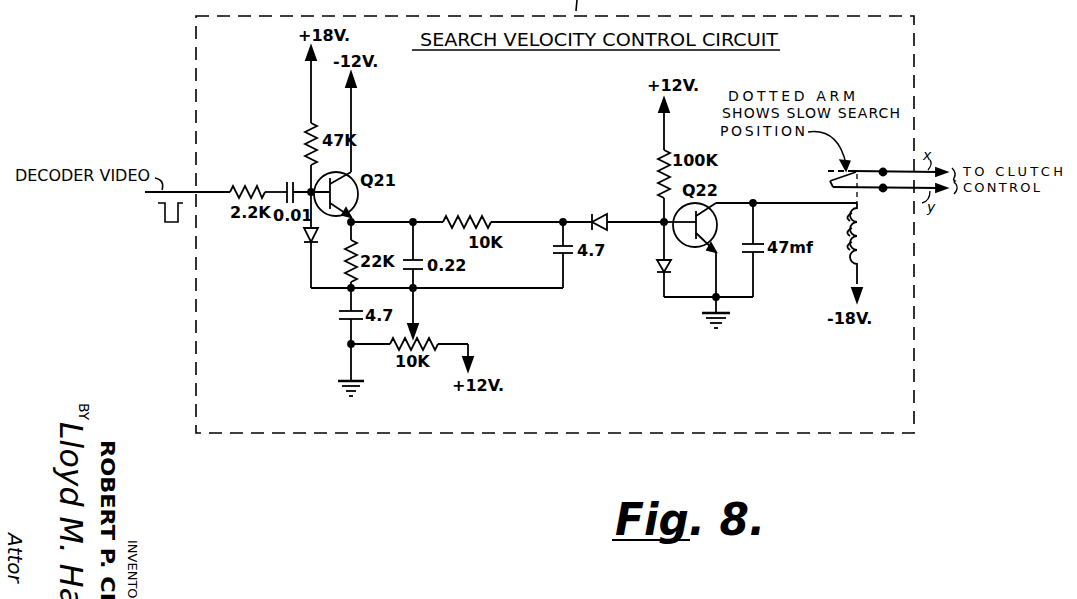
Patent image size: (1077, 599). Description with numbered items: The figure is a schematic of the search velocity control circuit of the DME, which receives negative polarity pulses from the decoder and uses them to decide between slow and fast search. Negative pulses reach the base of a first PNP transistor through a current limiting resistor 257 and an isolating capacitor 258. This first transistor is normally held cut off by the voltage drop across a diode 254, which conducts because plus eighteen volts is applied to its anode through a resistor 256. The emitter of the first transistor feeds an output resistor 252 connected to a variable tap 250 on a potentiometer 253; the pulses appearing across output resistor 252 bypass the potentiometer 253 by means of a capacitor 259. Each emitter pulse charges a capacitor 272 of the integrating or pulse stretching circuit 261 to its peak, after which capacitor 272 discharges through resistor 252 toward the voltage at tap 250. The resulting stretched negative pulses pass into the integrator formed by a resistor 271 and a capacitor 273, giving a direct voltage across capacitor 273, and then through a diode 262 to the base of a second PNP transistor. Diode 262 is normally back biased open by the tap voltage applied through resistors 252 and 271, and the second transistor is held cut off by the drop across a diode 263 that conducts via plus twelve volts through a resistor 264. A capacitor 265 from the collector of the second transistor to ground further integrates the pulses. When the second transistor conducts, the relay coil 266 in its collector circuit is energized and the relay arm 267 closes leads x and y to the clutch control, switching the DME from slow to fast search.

The variable tap 250 is at (422, 334).
The output resistor 252 is at (353, 256).
The potentiometer 253 is at (432, 346).
The diode 254 is at (305, 243).
The resistor 256 is at (306, 137).
The current limiting resistor 257 is at (243, 180).
The isolating capacitor 258 is at (291, 179).
The capacitor 259 is at (338, 317).
The integrating or pulse stretching circuit 261 is at (493, 283).
The diode 262 is at (602, 210).
The diode 263 is at (656, 276).
The resistor 264 is at (656, 174).
The capacitor 265 is at (760, 242).
The relay coil 266 is at (858, 225).
The relay arm 267 is at (865, 171).
The resistor 271 is at (478, 208).
The capacitor 272 is at (422, 258).
The capacitor 273 is at (552, 252).